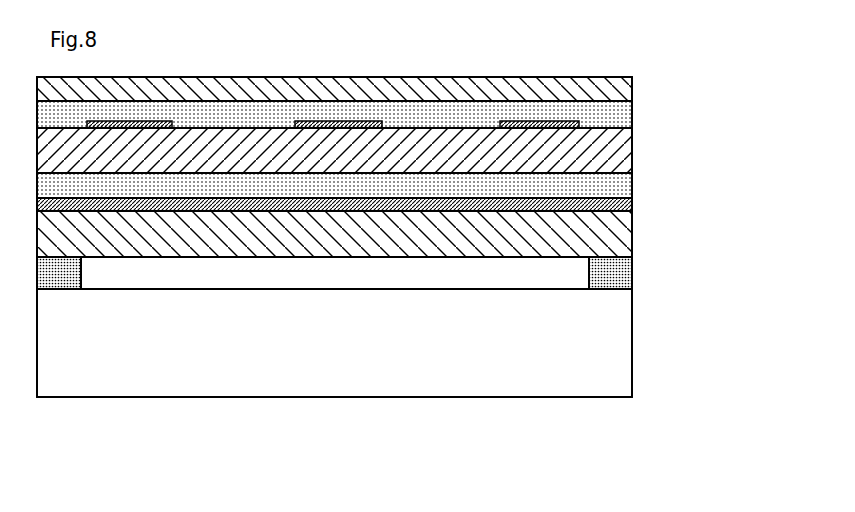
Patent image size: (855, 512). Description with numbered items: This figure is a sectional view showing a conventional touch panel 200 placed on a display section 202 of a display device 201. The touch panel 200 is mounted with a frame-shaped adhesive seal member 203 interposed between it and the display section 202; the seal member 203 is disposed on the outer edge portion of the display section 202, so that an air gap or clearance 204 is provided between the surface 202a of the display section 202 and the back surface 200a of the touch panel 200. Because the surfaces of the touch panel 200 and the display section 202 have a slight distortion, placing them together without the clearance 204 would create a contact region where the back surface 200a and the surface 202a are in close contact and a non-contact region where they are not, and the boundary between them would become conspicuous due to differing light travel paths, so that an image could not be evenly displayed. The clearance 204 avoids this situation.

The touch panel 200 is at (647, 77).
The back surface of the touch panel 200a is at (155, 257).
The display device 201 is at (666, 366).
The display section 202 is at (632, 340).
The surface of the display section 202a is at (420, 289).
The frame-shaped adhesive seal member 203 is at (632, 277).
The air gap (clearance) 204 is at (530, 275).